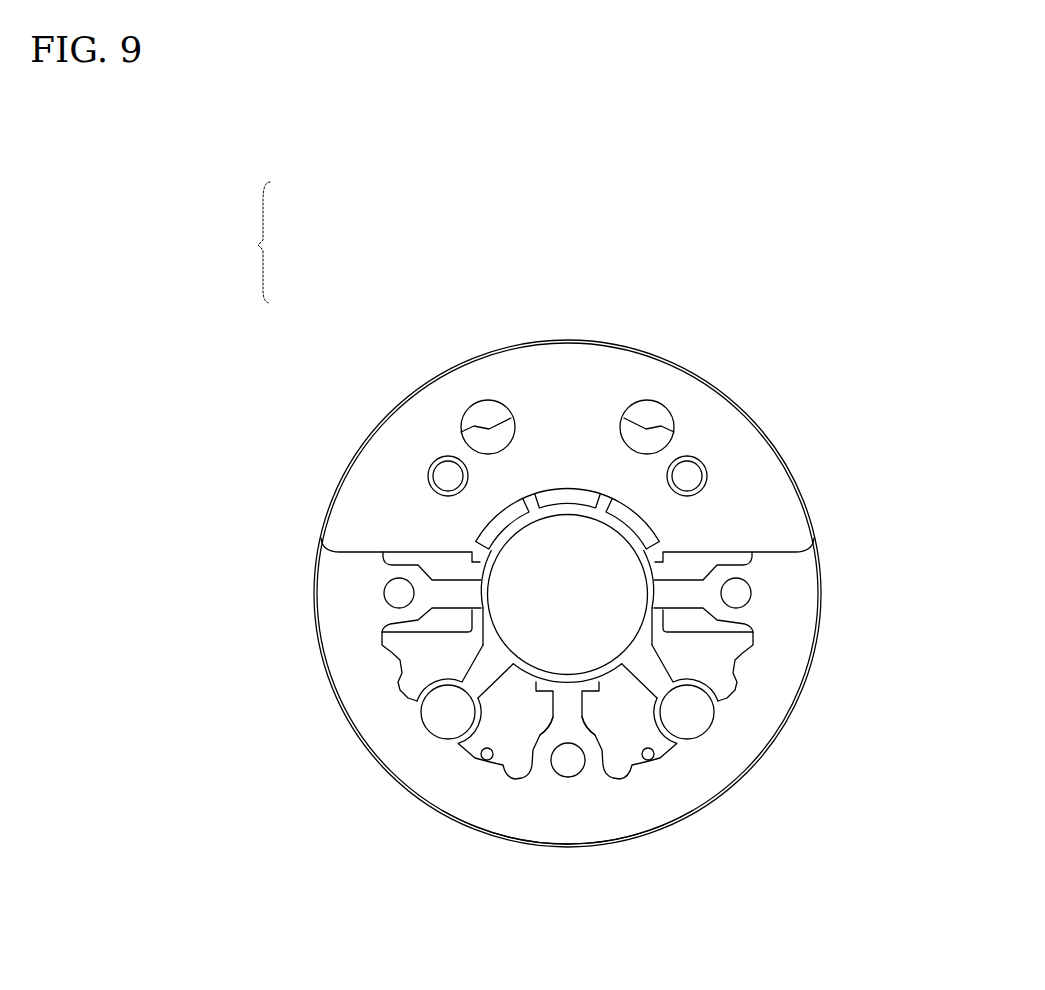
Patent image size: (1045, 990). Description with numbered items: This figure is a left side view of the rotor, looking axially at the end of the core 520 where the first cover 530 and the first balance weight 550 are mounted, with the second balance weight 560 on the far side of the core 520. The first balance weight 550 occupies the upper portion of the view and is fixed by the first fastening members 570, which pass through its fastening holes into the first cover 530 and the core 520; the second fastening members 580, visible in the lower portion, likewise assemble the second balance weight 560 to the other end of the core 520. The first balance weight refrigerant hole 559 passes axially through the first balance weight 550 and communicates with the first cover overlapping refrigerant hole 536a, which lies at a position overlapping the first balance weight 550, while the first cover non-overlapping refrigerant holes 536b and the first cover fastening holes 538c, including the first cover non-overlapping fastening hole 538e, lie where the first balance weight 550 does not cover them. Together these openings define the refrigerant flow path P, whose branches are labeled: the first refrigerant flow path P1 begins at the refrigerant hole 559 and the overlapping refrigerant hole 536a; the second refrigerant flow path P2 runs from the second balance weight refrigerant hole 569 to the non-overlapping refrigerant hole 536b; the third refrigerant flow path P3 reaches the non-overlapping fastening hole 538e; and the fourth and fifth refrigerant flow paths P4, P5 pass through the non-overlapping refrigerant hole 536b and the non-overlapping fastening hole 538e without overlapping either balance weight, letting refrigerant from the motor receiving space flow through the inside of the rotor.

The refrigerant flow path P is at (267, 242).
The first refrigerant flow path P1 is at (462, 420).
The second refrigerant flow path P2 is at (518, 785).
The third refrigerant flow path P3 is at (568, 765).
The fourth refrigerant flow path P4 is at (455, 560).
The fifth refrigerant flow path P5 is at (399, 593).
The core 520 is at (598, 508).
The first cover 530 is at (520, 828).
The first cover overlapping refrigerant hole 536a is at (570, 380).
The first cover non-overlapping refrigerant hole 536b is at (400, 563).
The first cover fastening hole 538c is at (539, 757).
The first cover non-overlapping fastening hole 538e is at (385, 598).
The first balance weight 550 is at (567, 370).
The first balance weight refrigerant hole 559 is at (481, 428).
The second balance weight 560 is at (672, 805).
The second balance weight refrigerant hole 569 is at (560, 722).
The first fastening member 570 is at (447, 477).
The second fastening member 580 is at (435, 712).